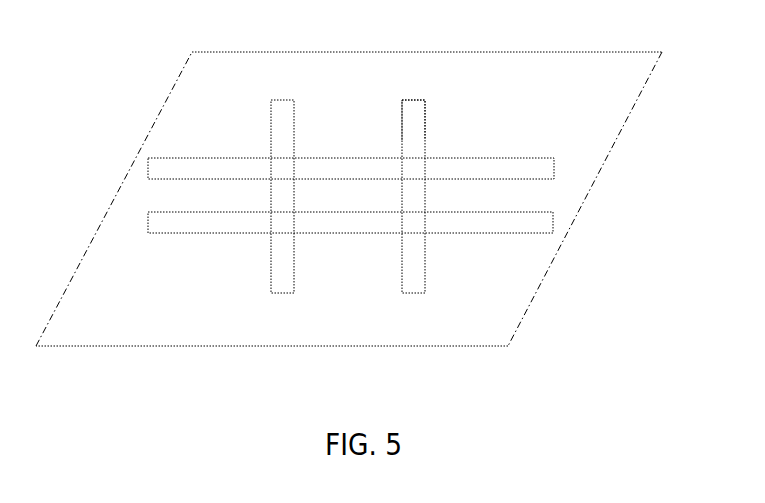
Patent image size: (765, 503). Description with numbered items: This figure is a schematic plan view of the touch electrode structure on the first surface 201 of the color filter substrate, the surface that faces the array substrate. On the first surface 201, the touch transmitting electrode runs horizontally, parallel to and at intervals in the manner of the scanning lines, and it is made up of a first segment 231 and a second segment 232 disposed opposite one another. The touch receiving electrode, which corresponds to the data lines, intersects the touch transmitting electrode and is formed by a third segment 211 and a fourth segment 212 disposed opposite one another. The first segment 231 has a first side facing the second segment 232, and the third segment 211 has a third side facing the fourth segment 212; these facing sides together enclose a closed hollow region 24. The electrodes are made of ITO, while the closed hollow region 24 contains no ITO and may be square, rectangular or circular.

The first surface 201 is at (582, 112).
The first segment 231 is at (542, 170).
The fourth segment 212 is at (417, 195).
The second segment 232 is at (335, 170).
The closed hollow region 24 is at (413, 172).
The third segment 211 is at (413, 113).